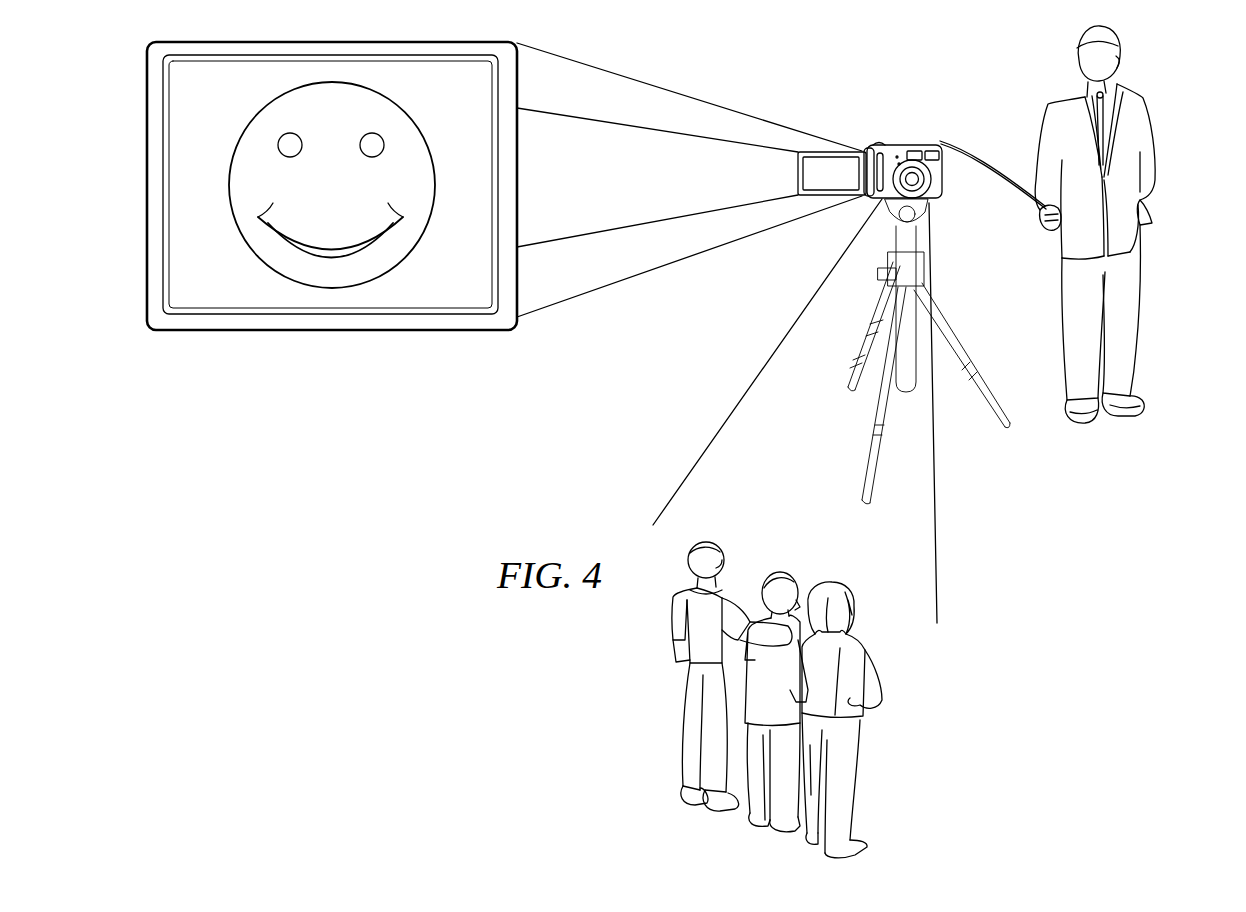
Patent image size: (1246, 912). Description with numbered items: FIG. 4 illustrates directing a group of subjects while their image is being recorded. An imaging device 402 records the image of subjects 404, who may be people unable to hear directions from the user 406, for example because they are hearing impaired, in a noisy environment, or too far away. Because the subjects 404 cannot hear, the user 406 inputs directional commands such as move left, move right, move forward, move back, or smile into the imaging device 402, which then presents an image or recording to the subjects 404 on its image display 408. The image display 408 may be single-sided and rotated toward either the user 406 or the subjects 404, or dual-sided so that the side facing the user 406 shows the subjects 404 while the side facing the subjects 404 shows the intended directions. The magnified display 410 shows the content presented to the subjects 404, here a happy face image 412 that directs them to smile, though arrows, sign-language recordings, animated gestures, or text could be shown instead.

The imaging device 402 is at (912, 145).
The subjects 404 is at (865, 748).
The user 406 is at (1157, 173).
The image display 408 is at (797, 178).
The magnified display 410 is at (208, 332).
The happy face image 412 is at (403, 260).